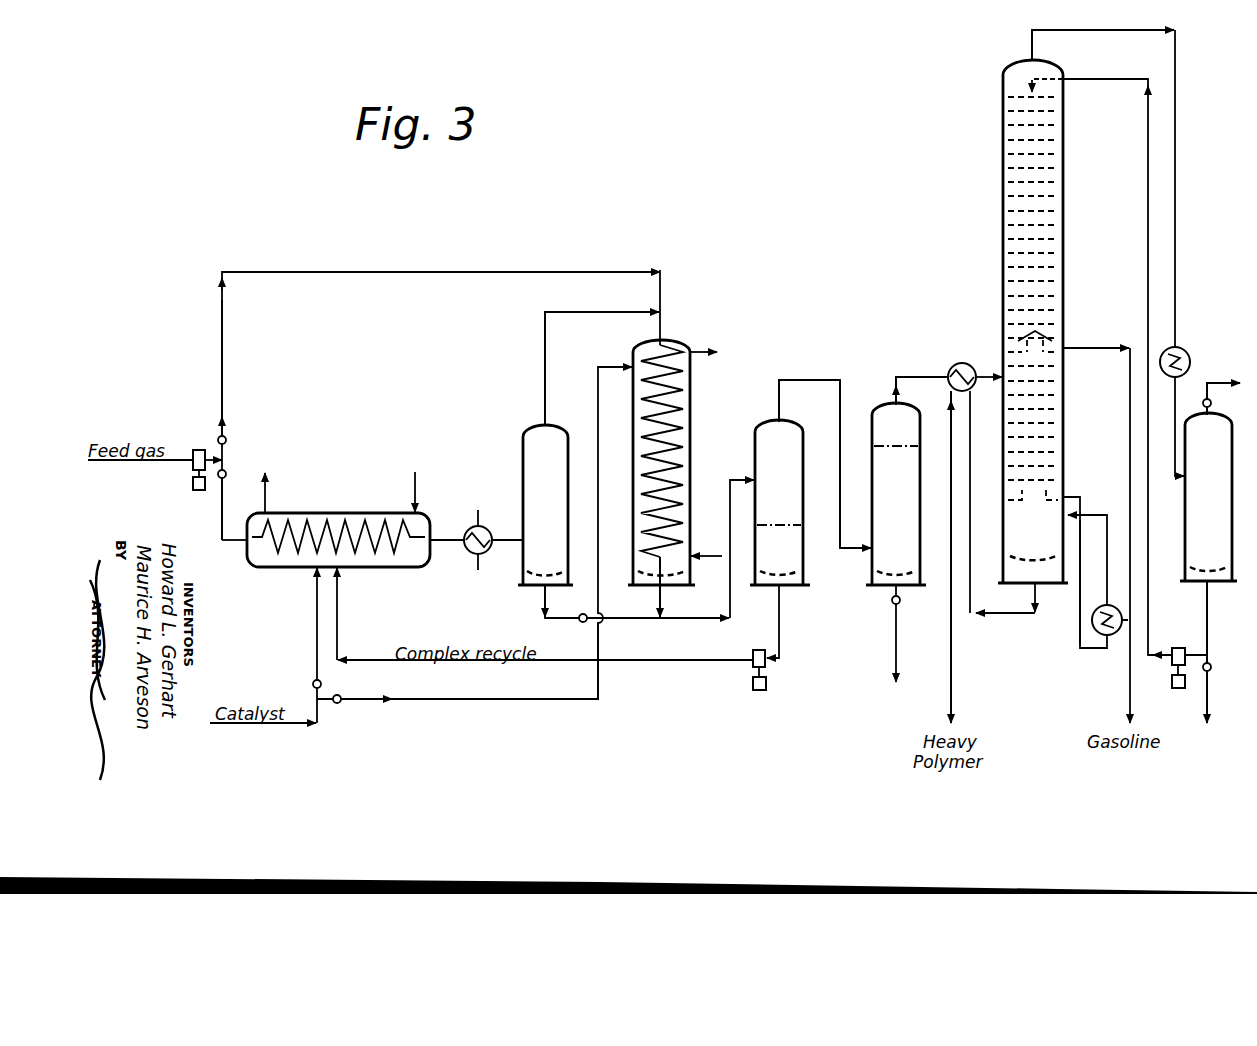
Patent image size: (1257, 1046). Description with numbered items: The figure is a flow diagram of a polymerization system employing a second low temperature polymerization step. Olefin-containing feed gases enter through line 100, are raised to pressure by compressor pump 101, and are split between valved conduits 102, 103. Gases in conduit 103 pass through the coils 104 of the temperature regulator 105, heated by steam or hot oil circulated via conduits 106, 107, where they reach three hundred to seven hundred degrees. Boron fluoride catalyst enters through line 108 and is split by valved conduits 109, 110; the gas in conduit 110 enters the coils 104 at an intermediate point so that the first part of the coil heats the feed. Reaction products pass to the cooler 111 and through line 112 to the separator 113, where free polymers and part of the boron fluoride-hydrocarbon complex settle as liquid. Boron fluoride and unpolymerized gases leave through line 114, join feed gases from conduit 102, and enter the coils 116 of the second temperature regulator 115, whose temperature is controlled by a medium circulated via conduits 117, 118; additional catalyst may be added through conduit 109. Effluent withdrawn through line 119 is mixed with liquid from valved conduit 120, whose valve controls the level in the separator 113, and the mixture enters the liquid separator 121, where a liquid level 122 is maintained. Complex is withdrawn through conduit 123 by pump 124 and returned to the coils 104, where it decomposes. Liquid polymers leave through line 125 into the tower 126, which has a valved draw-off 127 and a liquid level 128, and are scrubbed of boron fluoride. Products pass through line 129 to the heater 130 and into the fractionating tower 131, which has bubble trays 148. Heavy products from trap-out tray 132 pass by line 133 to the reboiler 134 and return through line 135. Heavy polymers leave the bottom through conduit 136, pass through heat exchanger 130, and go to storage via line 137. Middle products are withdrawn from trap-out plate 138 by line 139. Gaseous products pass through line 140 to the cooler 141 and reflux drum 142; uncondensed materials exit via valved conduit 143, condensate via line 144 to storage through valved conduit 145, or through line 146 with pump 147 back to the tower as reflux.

The line 100 is at (190, 462).
The compressor pump 101 is at (193, 487).
The valved conduit 102 is at (227, 432).
The valved conduit 103 is at (226, 512).
The coils 104 is at (308, 524).
The temperature regulator 105 is at (370, 513).
The conduit 106 is at (427, 494).
The conduit 107 is at (268, 494).
The line 108 is at (298, 726).
The valved conduit 109 is at (414, 701).
The valved conduit 110 is at (315, 645).
The cooler 111 is at (495, 521).
The line 112 is at (503, 546).
The separator 113 is at (530, 432).
The line 114 is at (541, 326).
The second temperature regulator 115 is at (681, 346).
The coils 116 is at (688, 418).
The conduit 117 is at (708, 551).
The conduit 118 is at (708, 354).
The line 119 is at (663, 605).
The valved conduit 120 is at (545, 613).
The liquid separator 121 is at (794, 433).
The line 122 is at (790, 524).
The conduit 123 is at (627, 660).
The pump 124 is at (767, 681).
The line 125 is at (831, 379).
The tower 126 is at (881, 412).
The valved draw-off 127 is at (900, 658).
The line 128 is at (912, 447).
The line 129 is at (920, 374).
The heater 130 is at (964, 363).
The fractionating tower 131 is at (1001, 96).
The trap-out tray 132 is at (1046, 493).
The line 133 is at (1080, 628).
The reboiler 134 is at (1106, 638).
The line 135 is at (1100, 508).
The conduit 136 is at (985, 615).
The line 137 is at (953, 672).
The trap-out plate 138 is at (1050, 341).
The line 139 is at (1127, 358).
The line 140 is at (1139, 30).
The cooler 141 is at (1183, 352).
The reflux drum 142 is at (1187, 505).
The valved conduit 143 is at (1201, 382).
The line 144 is at (1207, 624).
The valved conduit 145 is at (1210, 712).
The line 146 is at (1151, 594).
The pump 147 is at (1172, 686).
The bubble trays 148 is at (1040, 212).